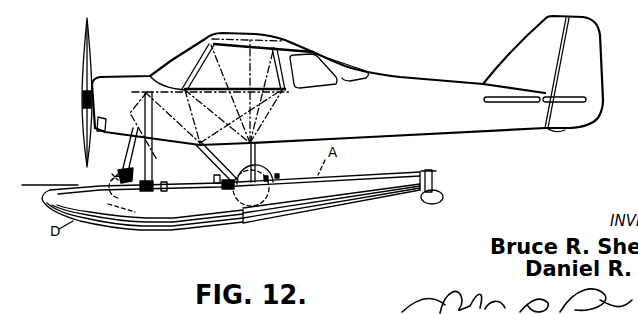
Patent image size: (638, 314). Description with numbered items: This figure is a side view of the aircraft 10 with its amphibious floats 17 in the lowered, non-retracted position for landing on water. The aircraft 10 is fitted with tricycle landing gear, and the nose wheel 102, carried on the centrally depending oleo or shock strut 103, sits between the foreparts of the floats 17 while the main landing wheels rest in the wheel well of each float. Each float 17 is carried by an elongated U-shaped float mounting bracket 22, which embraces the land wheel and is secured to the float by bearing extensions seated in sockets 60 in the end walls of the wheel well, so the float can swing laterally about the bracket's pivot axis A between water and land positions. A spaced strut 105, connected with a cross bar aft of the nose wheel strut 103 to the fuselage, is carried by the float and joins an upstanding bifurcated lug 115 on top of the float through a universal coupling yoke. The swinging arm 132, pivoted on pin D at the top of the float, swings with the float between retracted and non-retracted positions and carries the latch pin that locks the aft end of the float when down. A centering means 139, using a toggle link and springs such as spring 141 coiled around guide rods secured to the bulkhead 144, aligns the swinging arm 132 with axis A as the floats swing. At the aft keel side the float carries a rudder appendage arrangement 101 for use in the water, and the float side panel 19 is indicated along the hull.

The aircraft 10 is at (388, 88).
The amphibious float 17 is at (68, 191).
The float side wall 19 is at (105, 196).
The elongated U-shaped float mounting bracket 22 is at (272, 194).
The socket 60 is at (237, 165).
The rudder appendage arrangement 101 is at (442, 189).
The nose wheel 102 is at (127, 173).
The oleo or shock strut 103 is at (131, 143).
The strut 105 is at (153, 156).
The bifurcated lug 115 is at (167, 180).
The swinging arm 132 is at (148, 221).
The centering means 139 is at (113, 228).
The spring 141 is at (123, 229).
The bulkhead 144 is at (170, 223).